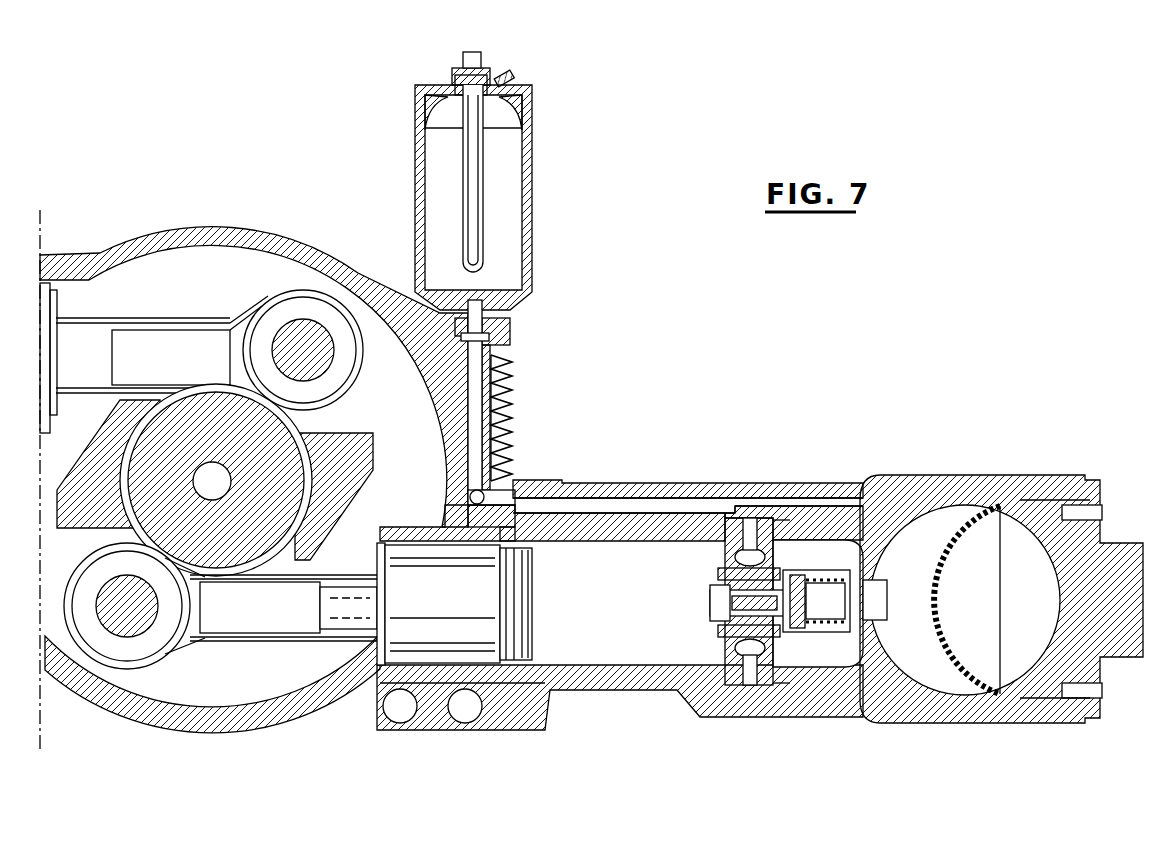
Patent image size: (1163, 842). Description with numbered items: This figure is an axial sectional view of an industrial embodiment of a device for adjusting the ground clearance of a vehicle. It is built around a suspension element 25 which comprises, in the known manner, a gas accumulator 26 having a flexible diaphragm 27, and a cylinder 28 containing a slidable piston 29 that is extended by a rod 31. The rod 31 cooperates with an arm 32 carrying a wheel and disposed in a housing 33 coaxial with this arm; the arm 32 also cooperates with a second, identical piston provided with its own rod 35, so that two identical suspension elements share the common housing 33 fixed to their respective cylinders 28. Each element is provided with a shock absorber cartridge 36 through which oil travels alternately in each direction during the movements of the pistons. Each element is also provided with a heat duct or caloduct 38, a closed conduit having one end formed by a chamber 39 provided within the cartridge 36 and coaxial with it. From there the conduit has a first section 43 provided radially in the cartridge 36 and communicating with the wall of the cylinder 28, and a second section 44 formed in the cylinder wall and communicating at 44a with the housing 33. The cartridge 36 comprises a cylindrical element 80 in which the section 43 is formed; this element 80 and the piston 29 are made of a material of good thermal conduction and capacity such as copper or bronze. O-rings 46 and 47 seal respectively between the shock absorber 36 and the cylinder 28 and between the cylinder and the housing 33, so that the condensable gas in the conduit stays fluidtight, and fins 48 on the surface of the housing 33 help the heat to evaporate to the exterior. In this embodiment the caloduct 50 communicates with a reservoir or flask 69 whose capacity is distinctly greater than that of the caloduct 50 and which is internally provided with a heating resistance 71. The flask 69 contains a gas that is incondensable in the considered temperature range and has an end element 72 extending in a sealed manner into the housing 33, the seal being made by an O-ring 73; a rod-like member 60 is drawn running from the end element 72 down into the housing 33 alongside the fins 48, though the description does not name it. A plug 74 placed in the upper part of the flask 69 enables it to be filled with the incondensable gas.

The suspension element 25 is at (660, 702).
The gas accumulator 26 is at (991, 474).
The flexible diaphragm 27 is at (955, 682).
The cylinder 28 is at (613, 680).
The piston 29 is at (454, 604).
The rod 31 is at (277, 628).
The arm 32 is at (206, 520).
The housing 33 is at (343, 277).
The rod 35 is at (173, 345).
The shock absorber cartridge 36 is at (787, 638).
The caloduct 38 is at (650, 506).
The chamber 39 is at (752, 650).
The first section 43 is at (745, 530).
The second section 44 is at (690, 517).
The communication point 44a is at (500, 500).
The O-ring 46 is at (768, 520).
The O-ring 47 is at (512, 517).
The fins 48 is at (502, 418).
The caloduct 50 is at (603, 482).
The valve rod 60 is at (478, 372).
The reservoir 69 is at (536, 248).
The heating resistance 71 is at (483, 188).
The end element 72 is at (498, 328).
The O-ring 73 is at (452, 314).
The plug 74 is at (506, 74).
The cylindrical element 80 is at (740, 662).